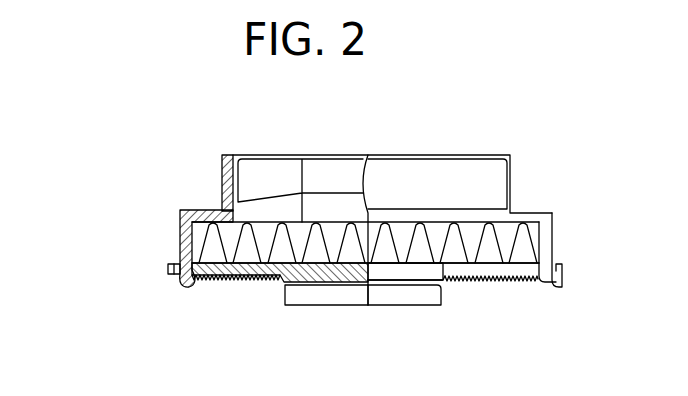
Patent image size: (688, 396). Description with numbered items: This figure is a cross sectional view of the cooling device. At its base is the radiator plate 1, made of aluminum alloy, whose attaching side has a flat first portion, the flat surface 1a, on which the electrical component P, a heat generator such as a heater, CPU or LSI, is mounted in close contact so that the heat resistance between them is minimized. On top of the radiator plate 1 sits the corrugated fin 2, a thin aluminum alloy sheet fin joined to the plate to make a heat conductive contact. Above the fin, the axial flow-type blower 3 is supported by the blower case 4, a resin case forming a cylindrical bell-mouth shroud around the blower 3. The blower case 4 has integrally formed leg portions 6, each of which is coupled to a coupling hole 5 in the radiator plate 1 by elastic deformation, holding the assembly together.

The radiator plate 1 is at (462, 270).
The flat surface 1a is at (405, 283).
The corrugated fin 2 is at (513, 250).
The axial flow-type blower 3 is at (275, 173).
The blower case 4 is at (222, 165).
The coupling hole 5 is at (168, 272).
The leg portion 6 is at (180, 242).
The electrical component P is at (330, 307).